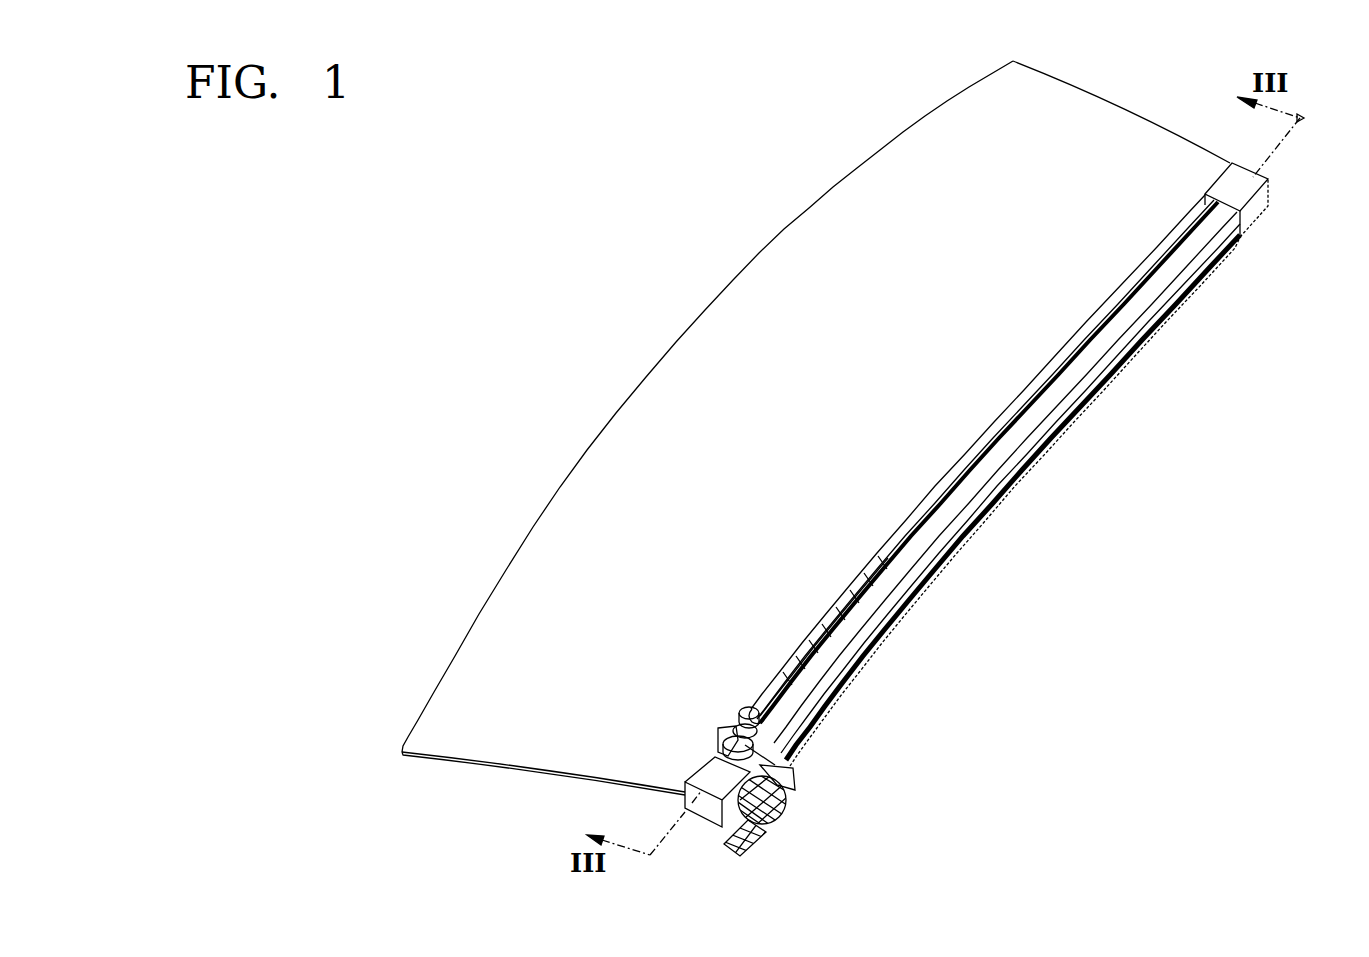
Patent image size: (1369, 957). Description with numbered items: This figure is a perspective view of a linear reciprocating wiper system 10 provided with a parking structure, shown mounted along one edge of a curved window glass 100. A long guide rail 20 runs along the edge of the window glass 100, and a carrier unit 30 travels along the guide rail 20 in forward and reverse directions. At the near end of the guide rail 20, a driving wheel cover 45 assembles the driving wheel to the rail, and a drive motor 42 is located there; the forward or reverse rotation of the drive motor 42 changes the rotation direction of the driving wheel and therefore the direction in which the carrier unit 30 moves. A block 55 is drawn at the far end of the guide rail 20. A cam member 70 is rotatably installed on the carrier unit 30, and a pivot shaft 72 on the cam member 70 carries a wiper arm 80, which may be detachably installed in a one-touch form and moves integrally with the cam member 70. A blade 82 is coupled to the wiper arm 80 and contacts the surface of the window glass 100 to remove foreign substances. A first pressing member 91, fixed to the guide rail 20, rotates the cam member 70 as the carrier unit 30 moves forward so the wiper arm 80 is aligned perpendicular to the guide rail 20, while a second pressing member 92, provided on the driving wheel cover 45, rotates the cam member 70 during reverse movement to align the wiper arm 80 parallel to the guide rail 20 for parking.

The linear reciprocating wiper system 10 is at (1170, 118).
The guide rail 20 is at (836, 694).
The carrier unit 30 is at (762, 748).
The drive motor 42 is at (798, 792).
The driving wheel cover 45 is at (707, 810).
The second end block 55 is at (1254, 176).
The cam member 70 is at (727, 735).
The pivot shaft 72 is at (738, 727).
The wiper arm 80 is at (770, 690).
The blade 82 is at (837, 637).
The first pressing member 91 is at (744, 708).
The second pressing member 92 is at (720, 753).
The window glass 100 is at (667, 374).